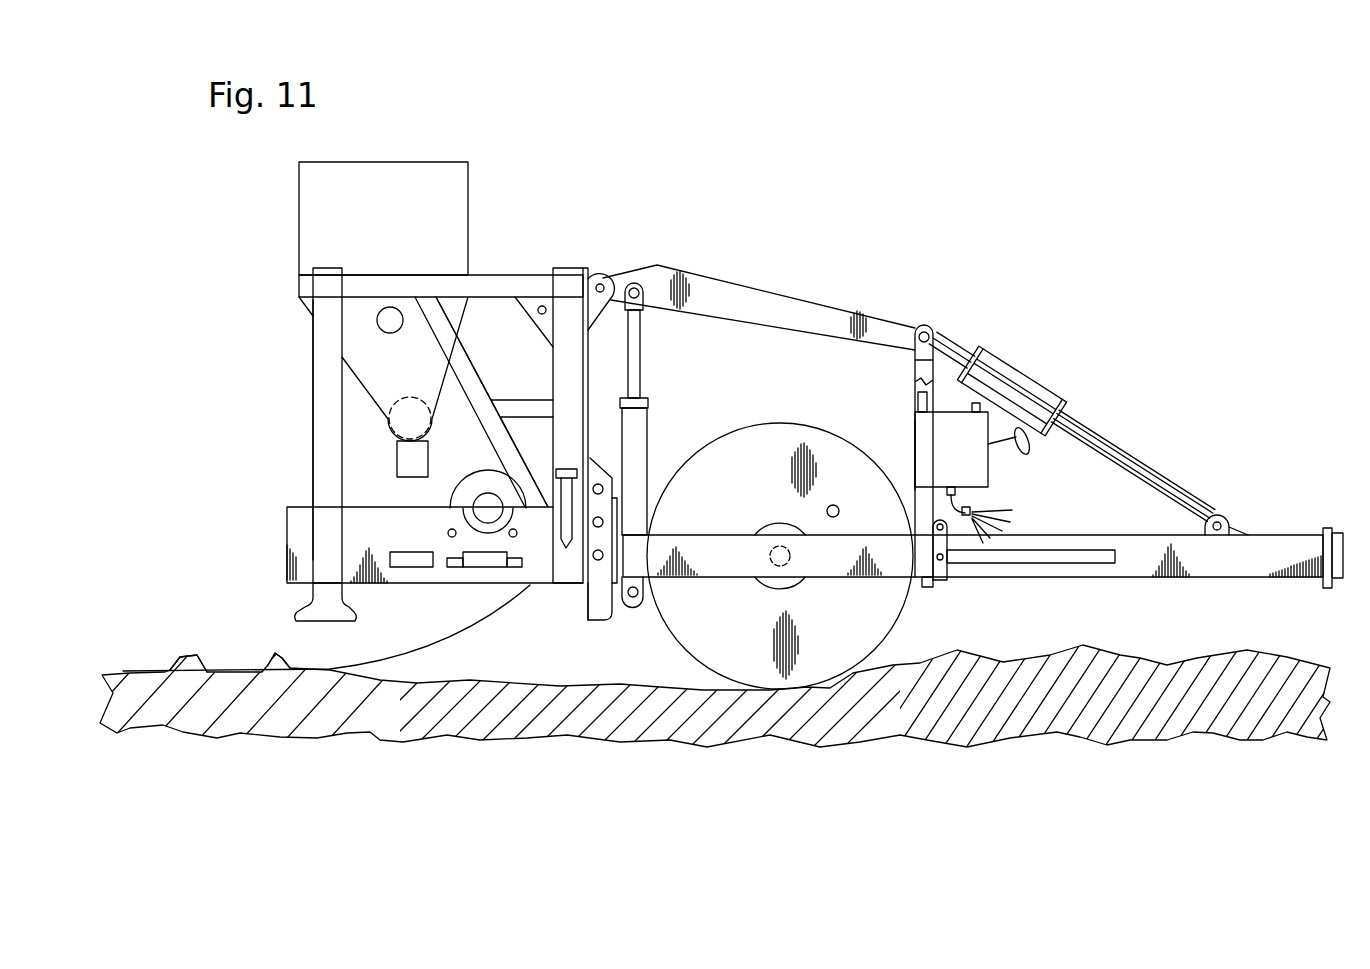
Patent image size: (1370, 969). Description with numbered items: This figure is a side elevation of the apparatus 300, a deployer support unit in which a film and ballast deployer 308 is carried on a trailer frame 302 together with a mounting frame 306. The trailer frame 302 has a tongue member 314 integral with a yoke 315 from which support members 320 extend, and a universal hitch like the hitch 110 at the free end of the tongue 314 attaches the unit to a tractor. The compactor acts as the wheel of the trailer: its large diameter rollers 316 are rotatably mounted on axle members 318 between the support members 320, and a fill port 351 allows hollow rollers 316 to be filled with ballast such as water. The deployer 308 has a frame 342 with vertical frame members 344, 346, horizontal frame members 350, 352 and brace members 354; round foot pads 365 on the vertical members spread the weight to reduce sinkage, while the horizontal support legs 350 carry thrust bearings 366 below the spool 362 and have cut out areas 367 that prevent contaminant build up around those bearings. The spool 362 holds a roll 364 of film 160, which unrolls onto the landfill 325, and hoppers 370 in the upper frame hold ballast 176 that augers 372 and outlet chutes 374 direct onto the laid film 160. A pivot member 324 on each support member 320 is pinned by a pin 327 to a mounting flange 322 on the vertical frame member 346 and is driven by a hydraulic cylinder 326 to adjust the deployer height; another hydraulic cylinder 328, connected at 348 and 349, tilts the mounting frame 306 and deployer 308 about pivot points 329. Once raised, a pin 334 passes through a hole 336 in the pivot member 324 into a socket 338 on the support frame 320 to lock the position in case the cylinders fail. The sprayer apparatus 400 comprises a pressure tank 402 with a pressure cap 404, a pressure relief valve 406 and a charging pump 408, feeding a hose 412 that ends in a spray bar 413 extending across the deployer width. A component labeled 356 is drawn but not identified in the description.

The hitch 110 is at (1326, 580).
The film 160 is at (277, 655).
The ballast 176 is at (185, 655).
The apparatus 300 is at (886, 201).
The trailer frame 302 is at (1196, 414).
The mounting frame 306 is at (606, 246).
The film and ballast deployer 308 is at (233, 212).
The tongue member 314 is at (1147, 578).
The yoke 315 is at (1066, 564).
The rollers 316 is at (837, 613).
The axle members 318 is at (781, 546).
The support members 320 is at (716, 562).
The mounting flange 322 is at (594, 281).
The pivot member 324 is at (800, 316).
The landfill 325 is at (503, 720).
The hydraulic cylinder 326 is at (658, 421).
The pin 327 is at (612, 279).
The hydraulic cylinder 328 is at (1212, 516).
The pivot points 329 is at (940, 585).
The pin 334 is at (566, 552).
The hole 336 is at (598, 600).
The socket 338 is at (607, 605).
The frame 342 is at (299, 287).
The vertical frame members 344 is at (312, 420).
The vertical frame members 346 is at (565, 380).
The connection point 348 is at (1232, 532).
The connection point 349 is at (933, 322).
The horizontal support legs 350 is at (287, 537).
The fill port 351 is at (835, 505).
The horizontal frame members 352 is at (377, 290).
The brace members 354 is at (512, 450).
The hopper 356 is at (452, 183).
The spool 362 is at (487, 508).
The roll 364 is at (472, 494).
The round foot pad 365 is at (305, 606).
The thrust bearings 366 is at (483, 570).
The cut out areas 367 is at (405, 570).
The hoppers 370 is at (373, 352).
The augers 372 is at (398, 410).
The outlet chutes 374 is at (397, 460).
The sprayer apparatus 400 is at (1062, 456).
The pressure tank 402 is at (950, 437).
The pressure cap 404 is at (915, 393).
The pressure relief valve 406 is at (990, 372).
The charging pump 408 is at (1030, 447).
The hose 412 is at (966, 506).
The spray manifold 413 is at (990, 510).